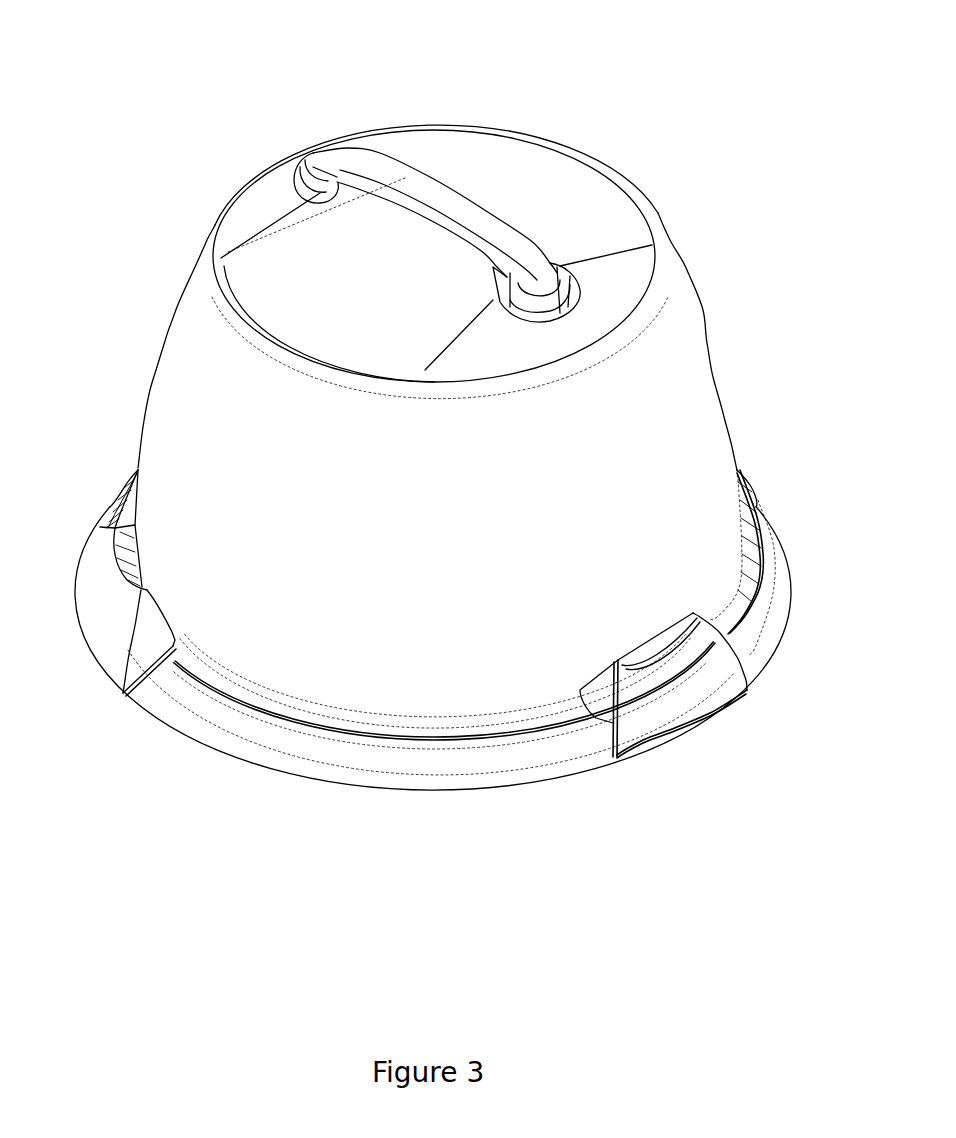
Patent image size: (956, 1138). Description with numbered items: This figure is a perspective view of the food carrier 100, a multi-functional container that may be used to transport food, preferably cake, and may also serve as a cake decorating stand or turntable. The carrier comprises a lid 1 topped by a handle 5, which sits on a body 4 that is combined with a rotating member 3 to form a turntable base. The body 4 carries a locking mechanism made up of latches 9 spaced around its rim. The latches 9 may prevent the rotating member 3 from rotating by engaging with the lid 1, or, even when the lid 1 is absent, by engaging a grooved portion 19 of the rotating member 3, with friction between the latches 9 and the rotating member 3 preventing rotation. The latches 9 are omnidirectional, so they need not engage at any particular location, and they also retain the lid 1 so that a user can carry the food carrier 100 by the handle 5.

The food carrier 100 is at (464, 458).
The lid 1 is at (718, 331).
The handle 5 is at (427, 172).
The rotating member 3 is at (197, 700).
The body 4 is at (427, 810).
The grooved portion 19 is at (762, 554).
The latches 9 is at (680, 726).